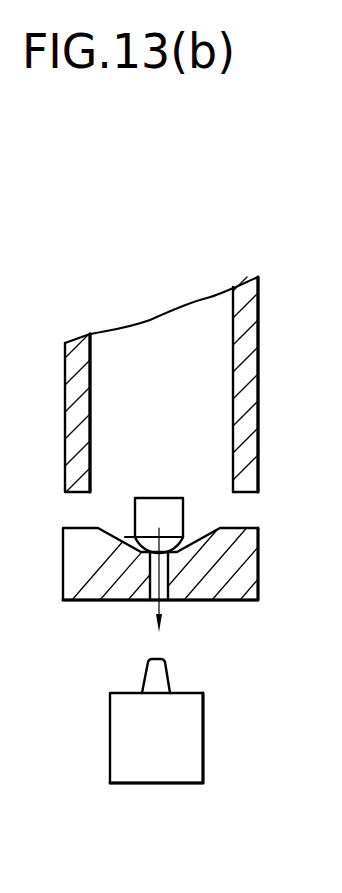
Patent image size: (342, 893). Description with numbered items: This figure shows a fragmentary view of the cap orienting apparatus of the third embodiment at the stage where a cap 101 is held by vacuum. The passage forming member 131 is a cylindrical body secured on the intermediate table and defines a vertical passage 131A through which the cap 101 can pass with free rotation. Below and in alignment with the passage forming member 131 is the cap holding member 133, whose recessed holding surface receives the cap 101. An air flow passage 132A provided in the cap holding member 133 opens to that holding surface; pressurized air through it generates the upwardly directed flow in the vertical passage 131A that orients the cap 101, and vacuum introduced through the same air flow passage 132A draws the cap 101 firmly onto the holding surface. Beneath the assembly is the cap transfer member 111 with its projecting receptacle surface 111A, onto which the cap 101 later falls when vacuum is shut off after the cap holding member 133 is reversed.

The passage forming member 131 is at (258, 320).
The vertical passage 131A is at (233, 318).
The cap 101 is at (168, 497).
The cap holding member 133 is at (258, 580).
The air flow passage 132A is at (151, 596).
The cap transfer member 111 is at (115, 732).
The projecting receptacle surface 111A is at (170, 681).